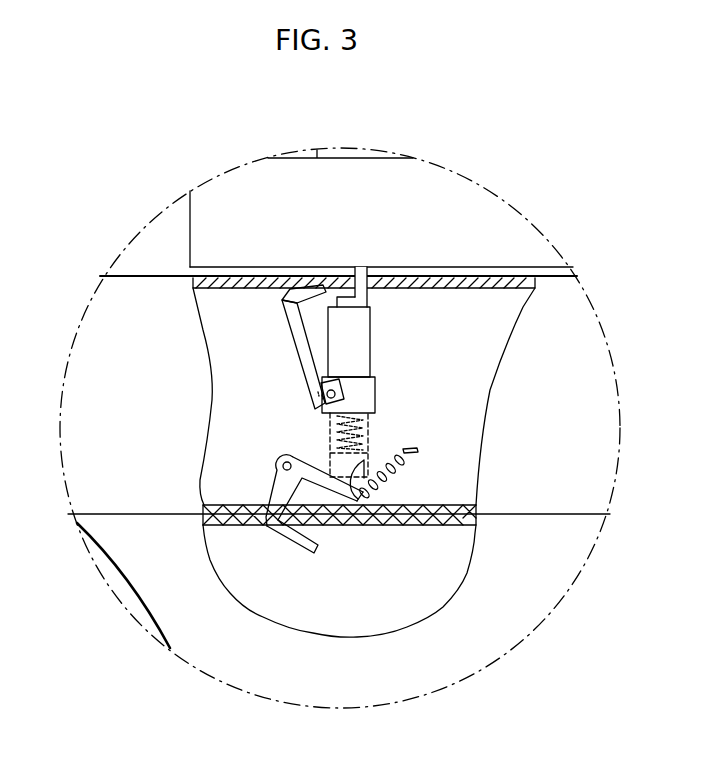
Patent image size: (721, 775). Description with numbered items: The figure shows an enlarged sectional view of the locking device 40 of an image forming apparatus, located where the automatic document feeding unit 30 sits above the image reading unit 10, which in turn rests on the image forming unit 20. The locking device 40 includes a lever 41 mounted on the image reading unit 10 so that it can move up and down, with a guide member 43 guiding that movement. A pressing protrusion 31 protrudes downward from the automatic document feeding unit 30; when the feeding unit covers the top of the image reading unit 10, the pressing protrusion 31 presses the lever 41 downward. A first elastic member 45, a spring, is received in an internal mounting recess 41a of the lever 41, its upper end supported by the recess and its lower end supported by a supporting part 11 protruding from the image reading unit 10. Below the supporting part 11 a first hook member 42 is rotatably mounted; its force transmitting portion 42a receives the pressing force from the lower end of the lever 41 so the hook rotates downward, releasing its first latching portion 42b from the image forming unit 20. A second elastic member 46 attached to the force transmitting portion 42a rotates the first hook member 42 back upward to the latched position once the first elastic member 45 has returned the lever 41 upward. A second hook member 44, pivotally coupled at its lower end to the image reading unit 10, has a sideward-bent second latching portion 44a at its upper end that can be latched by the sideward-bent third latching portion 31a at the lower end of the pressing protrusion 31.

The image reading unit 10 is at (127, 273).
The supporting part 11 is at (327, 458).
The image forming unit 20 is at (101, 507).
The automatic document feeding unit 30 is at (200, 233).
The pressing protrusion 31 is at (368, 282).
The third latching portion 31a is at (345, 298).
The locking device 40 is at (352, 442).
The lever 41 is at (370, 358).
The mounting recess 41a is at (378, 505).
The first hook member 42 is at (292, 520).
The force transmitting portion 42a is at (343, 503).
The first latching portion 42b is at (287, 540).
The guide member 43 is at (375, 397).
The second hook member 44 is at (298, 340).
The second latching portion 44a is at (282, 293).
The first elastic member 45 is at (327, 425).
The second elastic member 46 is at (397, 482).